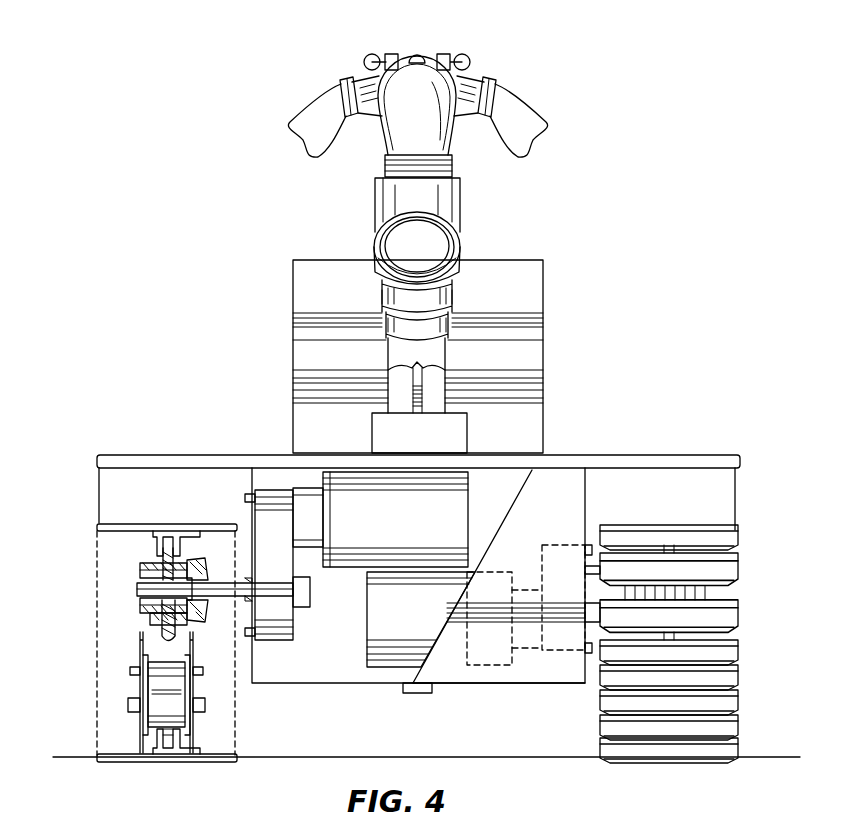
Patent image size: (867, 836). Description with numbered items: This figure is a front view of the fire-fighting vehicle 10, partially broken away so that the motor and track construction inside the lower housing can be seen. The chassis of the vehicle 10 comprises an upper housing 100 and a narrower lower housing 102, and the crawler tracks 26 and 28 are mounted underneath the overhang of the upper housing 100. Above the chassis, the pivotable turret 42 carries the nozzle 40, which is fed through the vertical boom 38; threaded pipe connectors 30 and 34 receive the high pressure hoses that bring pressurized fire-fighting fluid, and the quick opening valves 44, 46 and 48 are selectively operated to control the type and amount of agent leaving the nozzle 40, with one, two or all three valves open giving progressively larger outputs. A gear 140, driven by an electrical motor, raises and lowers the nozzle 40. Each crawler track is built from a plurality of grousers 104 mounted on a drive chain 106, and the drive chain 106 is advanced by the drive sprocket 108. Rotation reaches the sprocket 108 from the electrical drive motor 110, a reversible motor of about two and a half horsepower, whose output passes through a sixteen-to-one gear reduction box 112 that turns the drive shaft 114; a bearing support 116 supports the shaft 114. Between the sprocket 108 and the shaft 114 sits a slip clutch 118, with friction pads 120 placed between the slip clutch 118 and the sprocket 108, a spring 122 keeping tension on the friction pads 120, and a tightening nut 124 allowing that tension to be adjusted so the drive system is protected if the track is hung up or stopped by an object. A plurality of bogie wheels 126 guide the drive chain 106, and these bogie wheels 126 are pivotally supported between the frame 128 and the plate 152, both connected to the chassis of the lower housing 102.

The vehicle 10 is at (578, 297).
The crawler track 26 is at (783, 518).
The crawler track 28 is at (90, 503).
The threaded pipe connector 30 is at (505, 86).
The threaded pipe connector 34 is at (345, 84).
The vertical boom 38 is at (385, 170).
The nozzle 40 is at (462, 252).
The pivotable turret 42 is at (293, 345).
The valve 44 is at (461, 55).
The valve 46 is at (415, 53).
The valve 48 is at (376, 56).
The upper housing 100 is at (662, 455).
The lower housing 102 is at (527, 674).
The grouser 104 is at (161, 524).
The drive chain 106 is at (155, 545).
The drive sprocket 108 is at (160, 635).
The electrical drive motor 110 is at (470, 520).
The gear reduction box 112 is at (275, 640).
The drive shaft 114 is at (137, 590).
The bearing support 116 is at (190, 580).
The slip clutch 118 is at (192, 622).
The friction pads 120 is at (150, 618).
The spring 122 is at (140, 568).
The tightening nut 124 is at (140, 580).
The bogie wheel 126 is at (165, 695).
The frame 128 is at (193, 690).
The gear 140 is at (426, 393).
The plate 152 is at (140, 660).